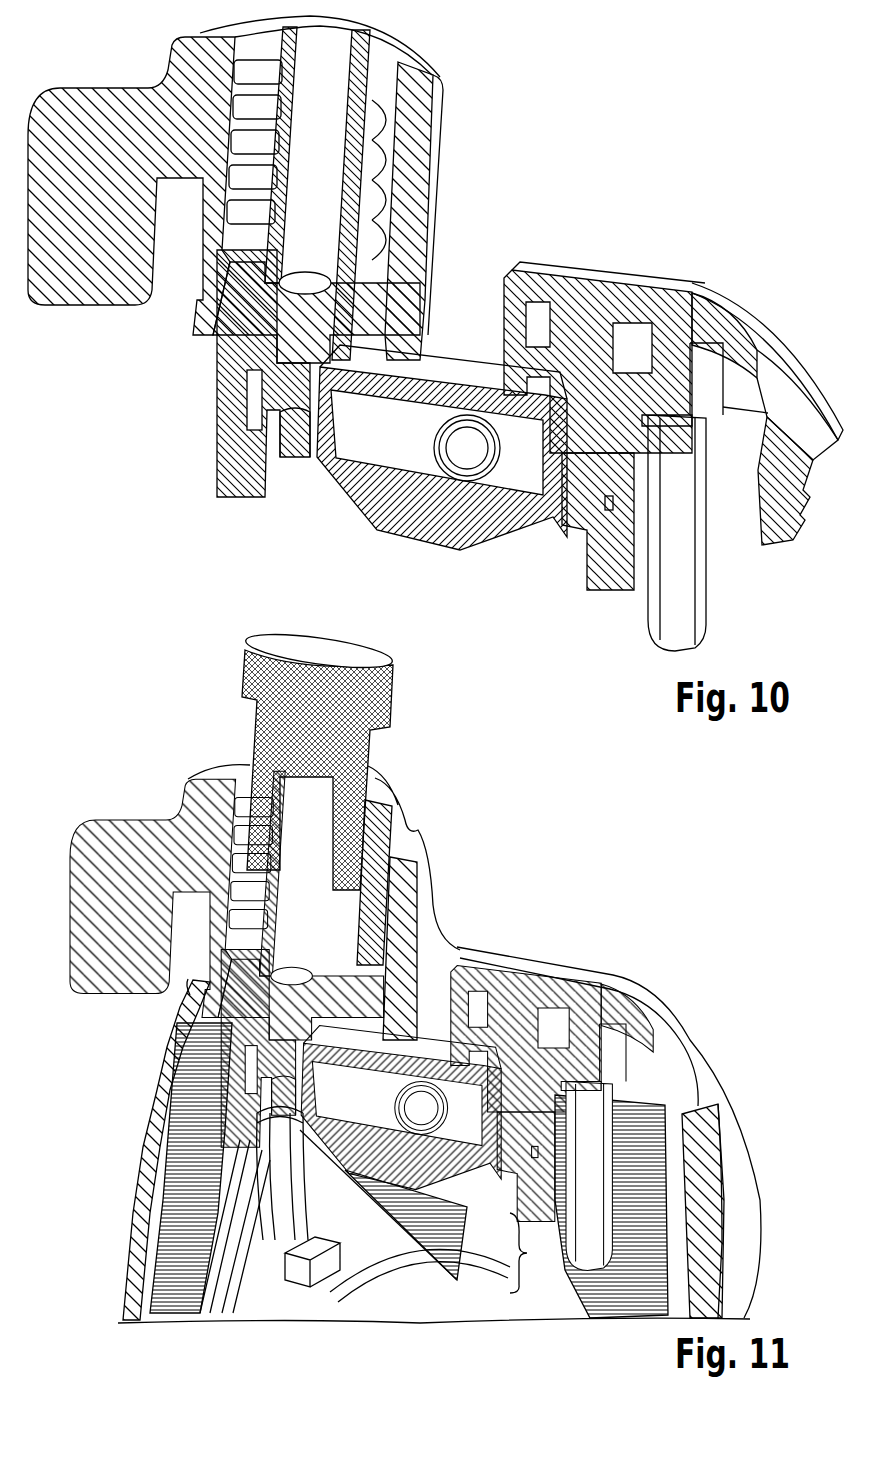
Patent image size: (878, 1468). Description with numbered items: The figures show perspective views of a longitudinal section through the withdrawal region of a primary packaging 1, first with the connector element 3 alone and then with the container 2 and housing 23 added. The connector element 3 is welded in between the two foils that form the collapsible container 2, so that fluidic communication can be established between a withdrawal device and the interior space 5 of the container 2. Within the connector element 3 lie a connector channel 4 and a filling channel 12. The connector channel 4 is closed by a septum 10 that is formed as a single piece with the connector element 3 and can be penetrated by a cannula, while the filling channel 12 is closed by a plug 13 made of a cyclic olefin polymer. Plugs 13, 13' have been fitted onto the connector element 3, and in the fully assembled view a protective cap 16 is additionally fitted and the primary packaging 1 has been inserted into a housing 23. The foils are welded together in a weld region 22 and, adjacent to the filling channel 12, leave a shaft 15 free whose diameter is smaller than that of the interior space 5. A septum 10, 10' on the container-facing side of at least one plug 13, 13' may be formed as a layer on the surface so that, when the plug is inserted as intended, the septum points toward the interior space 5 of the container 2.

In FIG. 11, the primary packaging 1 is at (170, 753).
In FIG. 11, the container 2 is at (200, 1243).
In FIG. 10, the connector element 3 is at (460, 348).
In FIG. 11, the connector element 3 is at (455, 1053).
In FIG. 10, the connector channel 4 is at (297, 428).
In FIG. 11, the connector channel 4 is at (283, 1093).
In FIG. 11, the interior space 5 is at (413, 1300).
In FIG. 10, the septum 10 is at (592, 537).
In FIG. 11, the septum 10 is at (512, 1214).
In FIG. 10, the septum 10' is at (238, 373).
In FIG. 11, the septum 10' is at (295, 1049).
In FIG. 10, the filling channel 12 is at (582, 445).
In FIG. 11, the filling channel 12 is at (518, 1102).
In FIG. 10, the plug 13 is at (673, 377).
In FIG. 11, the plug 13 is at (552, 1012).
In FIG. 10, the plug 13' is at (131, 186).
In FIG. 11, the plug 13' is at (153, 898).
In FIG. 11, the shaft 15 is at (550, 1258).
In FIG. 11, the protective cap 16 is at (348, 748).
In FIG. 11, the weld region 22 is at (203, 1167).
In FIG. 11, the housing 23 is at (128, 1273).